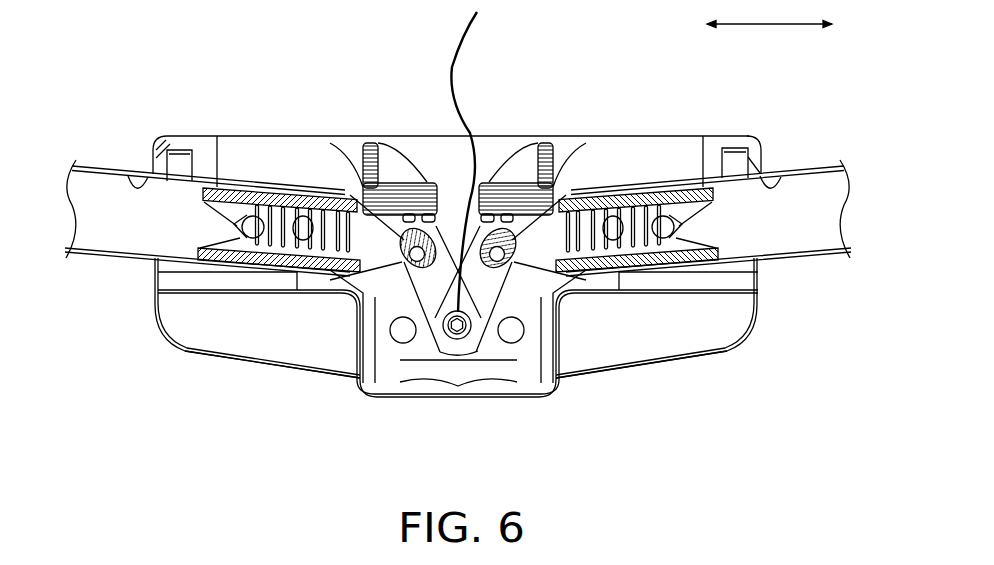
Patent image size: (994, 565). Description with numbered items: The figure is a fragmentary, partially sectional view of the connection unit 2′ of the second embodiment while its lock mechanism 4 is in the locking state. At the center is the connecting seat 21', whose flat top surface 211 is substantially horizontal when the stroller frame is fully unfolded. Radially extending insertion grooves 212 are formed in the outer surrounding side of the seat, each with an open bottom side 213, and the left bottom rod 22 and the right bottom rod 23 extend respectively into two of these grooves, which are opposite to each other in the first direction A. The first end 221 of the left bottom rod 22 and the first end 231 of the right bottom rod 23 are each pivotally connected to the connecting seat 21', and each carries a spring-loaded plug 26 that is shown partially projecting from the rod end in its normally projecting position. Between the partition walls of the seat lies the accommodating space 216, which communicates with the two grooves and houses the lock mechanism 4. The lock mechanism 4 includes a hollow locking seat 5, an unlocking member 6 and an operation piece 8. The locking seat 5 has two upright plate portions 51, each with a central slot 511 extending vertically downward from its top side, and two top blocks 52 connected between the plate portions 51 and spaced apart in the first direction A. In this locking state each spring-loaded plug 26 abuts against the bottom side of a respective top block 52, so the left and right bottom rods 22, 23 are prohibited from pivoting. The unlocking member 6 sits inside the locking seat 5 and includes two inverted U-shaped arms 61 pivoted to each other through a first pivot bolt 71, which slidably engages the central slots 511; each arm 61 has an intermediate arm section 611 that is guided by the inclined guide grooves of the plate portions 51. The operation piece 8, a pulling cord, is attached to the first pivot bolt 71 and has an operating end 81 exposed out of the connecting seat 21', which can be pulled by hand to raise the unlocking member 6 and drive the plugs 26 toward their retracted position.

The connection unit 2′ is at (143, 33).
The connecting seat 21' is at (499, 327).
The top surface 211 is at (733, 135).
The insertion groove 212 is at (157, 180).
The open bottom side 213 is at (228, 292).
The accommodating space 216 is at (636, 160).
The first end 231 is at (676, 183).
The front bottom rod 22 is at (85, 165).
The first end 221 is at (217, 186).
The rear bottom rod 23 is at (829, 167).
The spring-loaded plug 26 is at (274, 190).
The lock mechanism 4 is at (523, 100).
The locking seat 5 is at (546, 130).
The plate portion 51 is at (393, 300).
The central slot 511 is at (449, 196).
The top block 52 is at (362, 183).
The unlocking member 6 is at (488, 347).
The inverted U-shaped arm 61 is at (420, 316).
The intermediate arm section 611 is at (407, 222).
The first pivot bolt 71 is at (461, 337).
The operation piece 8 is at (449, 67).
The operating end 81 is at (466, 28).
The first direction A is at (769, 14).